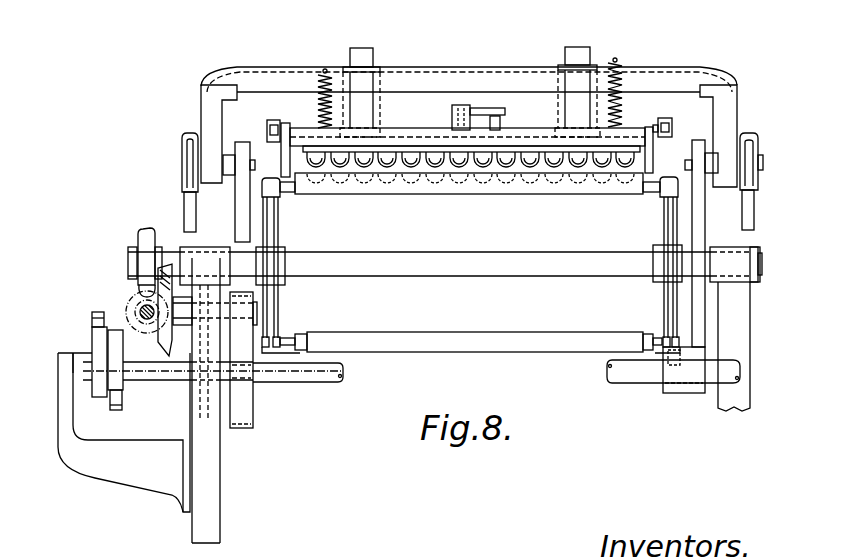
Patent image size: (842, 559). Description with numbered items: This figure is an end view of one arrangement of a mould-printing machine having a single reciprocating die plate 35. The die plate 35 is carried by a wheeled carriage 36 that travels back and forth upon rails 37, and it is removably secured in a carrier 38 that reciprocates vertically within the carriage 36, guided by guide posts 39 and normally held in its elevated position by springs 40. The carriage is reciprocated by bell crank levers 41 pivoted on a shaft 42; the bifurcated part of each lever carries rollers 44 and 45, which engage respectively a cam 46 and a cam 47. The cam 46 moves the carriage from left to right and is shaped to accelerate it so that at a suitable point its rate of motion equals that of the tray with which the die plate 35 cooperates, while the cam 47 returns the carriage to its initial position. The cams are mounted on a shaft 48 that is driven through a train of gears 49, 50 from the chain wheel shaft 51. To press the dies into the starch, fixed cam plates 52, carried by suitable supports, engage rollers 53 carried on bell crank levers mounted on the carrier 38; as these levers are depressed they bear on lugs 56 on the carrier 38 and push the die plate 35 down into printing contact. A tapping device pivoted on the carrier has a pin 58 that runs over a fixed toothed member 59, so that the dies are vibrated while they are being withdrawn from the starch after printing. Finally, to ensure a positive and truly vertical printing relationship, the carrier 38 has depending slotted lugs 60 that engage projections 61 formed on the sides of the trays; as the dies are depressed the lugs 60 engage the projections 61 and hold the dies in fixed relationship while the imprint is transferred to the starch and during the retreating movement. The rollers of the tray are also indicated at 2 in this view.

The roller 2 is at (447, 191).
The die plate 35 is at (436, 146).
The wheeled carriage 36 is at (393, 78).
The rails 37 is at (193, 223).
The carrier 38 is at (534, 137).
The guide posts 39 is at (350, 50).
The springs 40 is at (322, 106).
The bell crank levers 41 is at (238, 200).
The shaft 42 is at (628, 374).
The roller 44 is at (100, 312).
The roller 45 is at (122, 409).
The cam 46 is at (93, 337).
The cam 47 is at (123, 389).
The shaft 48 is at (310, 373).
The gear 49 is at (251, 398).
The gear 50 is at (150, 243).
The chain wheel shaft 51 is at (463, 263).
The fixed cam plates 52 is at (268, 132).
The rollers 53 is at (274, 121).
The lugs 56 is at (286, 153).
The pin 58 is at (493, 108).
The fixed toothed member 59 is at (502, 125).
The depending slotted lugs 60 is at (296, 175).
The projections 61 is at (290, 190).